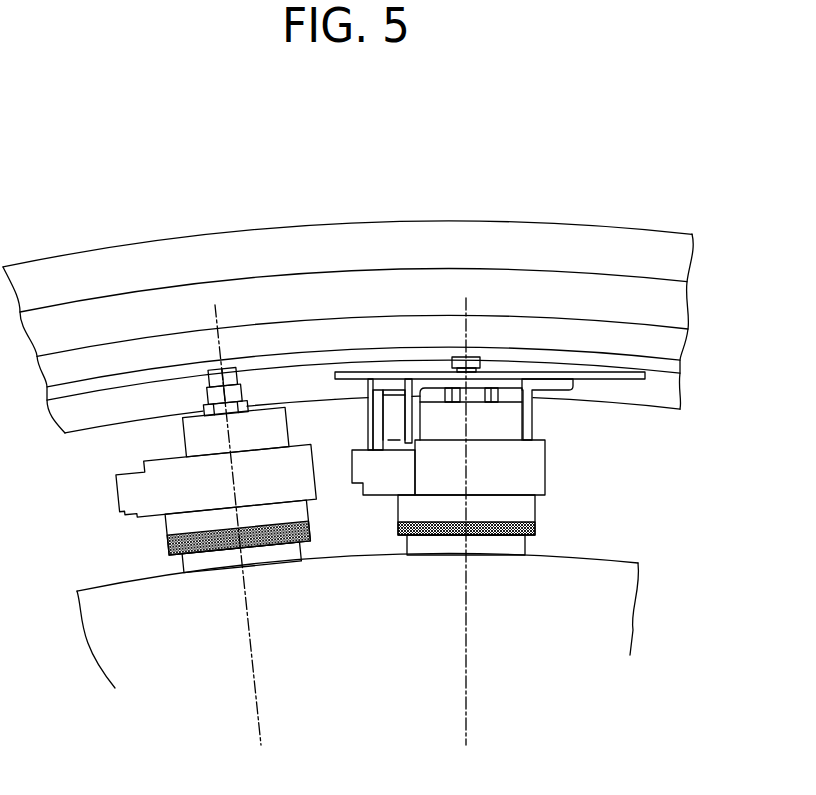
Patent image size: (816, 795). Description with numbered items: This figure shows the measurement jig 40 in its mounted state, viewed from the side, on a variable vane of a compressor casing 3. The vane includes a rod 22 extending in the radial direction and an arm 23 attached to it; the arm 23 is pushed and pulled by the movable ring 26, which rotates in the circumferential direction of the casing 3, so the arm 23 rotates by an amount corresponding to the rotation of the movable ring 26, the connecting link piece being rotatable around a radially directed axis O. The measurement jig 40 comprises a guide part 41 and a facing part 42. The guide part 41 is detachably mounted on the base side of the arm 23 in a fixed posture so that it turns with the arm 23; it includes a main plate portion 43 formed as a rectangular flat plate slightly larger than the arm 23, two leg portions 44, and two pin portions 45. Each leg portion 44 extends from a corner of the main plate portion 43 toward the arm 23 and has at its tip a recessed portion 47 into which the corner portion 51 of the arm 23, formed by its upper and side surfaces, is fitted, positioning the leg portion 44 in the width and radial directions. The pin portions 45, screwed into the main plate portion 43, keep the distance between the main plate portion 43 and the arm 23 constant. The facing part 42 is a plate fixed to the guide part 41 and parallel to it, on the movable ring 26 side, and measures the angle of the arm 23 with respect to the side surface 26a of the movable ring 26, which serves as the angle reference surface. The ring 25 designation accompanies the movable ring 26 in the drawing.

The casing 3 is at (623, 563).
The rod 22 is at (195, 565).
The arm 23 is at (130, 492).
The rotor 25 is at (347, 244).
The movable ring 26 is at (609, 235).
The side surface 26a is at (672, 390).
The measurement jig 40 is at (384, 356).
The guide part 41 is at (517, 380).
The facing part 42 is at (563, 355).
The main plate portion 43 is at (421, 388).
The leg portion 44 is at (378, 415).
The pin portion 45 is at (530, 422).
The recessed portion 47 is at (402, 418).
The corner portion 51 is at (395, 445).
The axis O is at (254, 673).